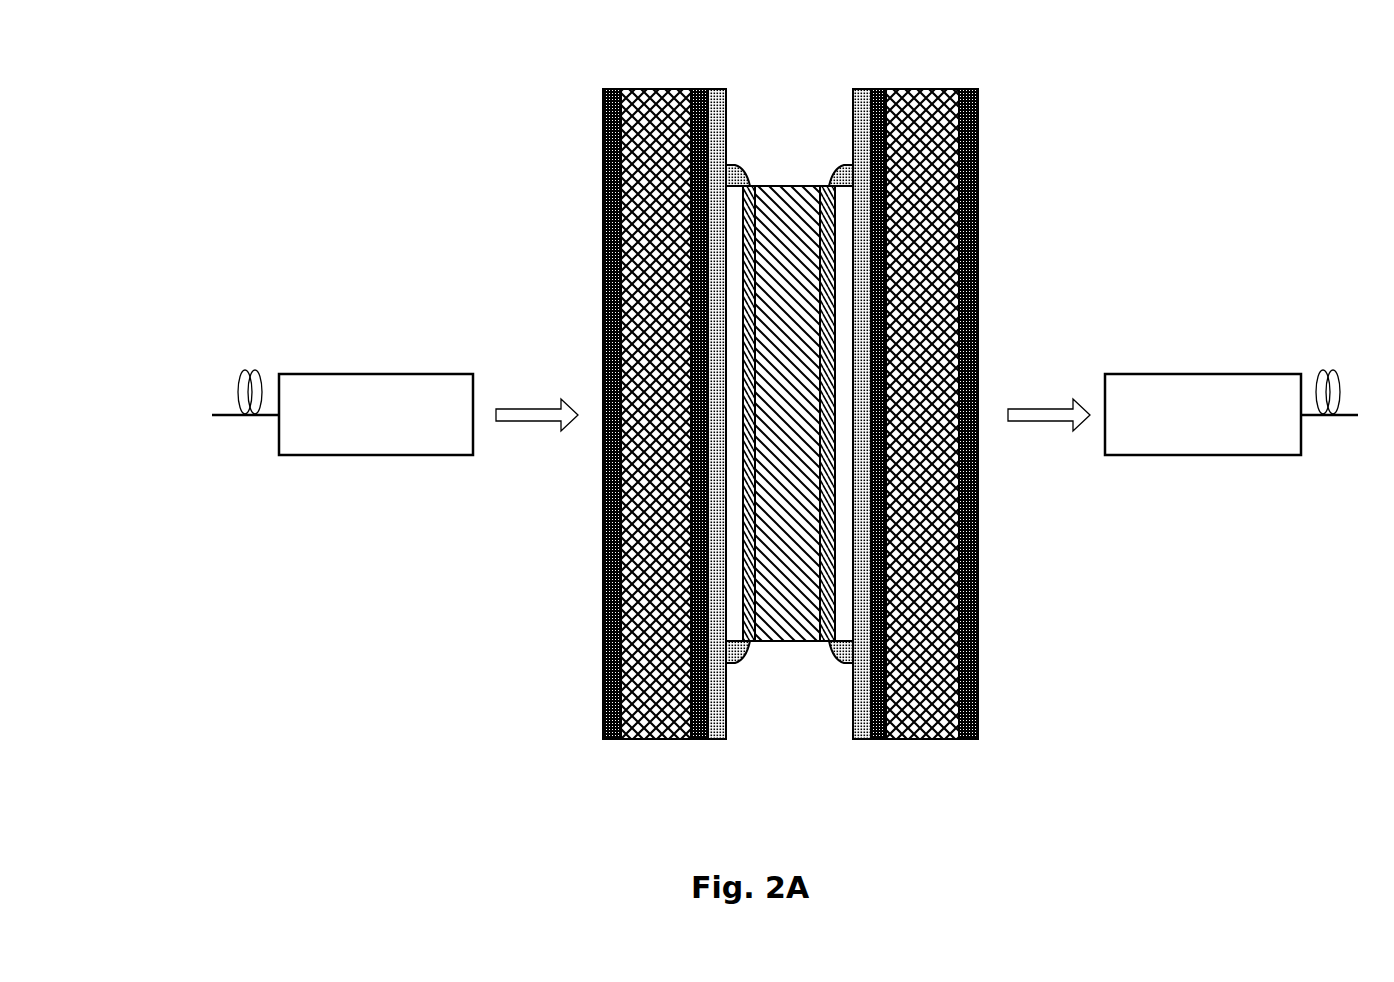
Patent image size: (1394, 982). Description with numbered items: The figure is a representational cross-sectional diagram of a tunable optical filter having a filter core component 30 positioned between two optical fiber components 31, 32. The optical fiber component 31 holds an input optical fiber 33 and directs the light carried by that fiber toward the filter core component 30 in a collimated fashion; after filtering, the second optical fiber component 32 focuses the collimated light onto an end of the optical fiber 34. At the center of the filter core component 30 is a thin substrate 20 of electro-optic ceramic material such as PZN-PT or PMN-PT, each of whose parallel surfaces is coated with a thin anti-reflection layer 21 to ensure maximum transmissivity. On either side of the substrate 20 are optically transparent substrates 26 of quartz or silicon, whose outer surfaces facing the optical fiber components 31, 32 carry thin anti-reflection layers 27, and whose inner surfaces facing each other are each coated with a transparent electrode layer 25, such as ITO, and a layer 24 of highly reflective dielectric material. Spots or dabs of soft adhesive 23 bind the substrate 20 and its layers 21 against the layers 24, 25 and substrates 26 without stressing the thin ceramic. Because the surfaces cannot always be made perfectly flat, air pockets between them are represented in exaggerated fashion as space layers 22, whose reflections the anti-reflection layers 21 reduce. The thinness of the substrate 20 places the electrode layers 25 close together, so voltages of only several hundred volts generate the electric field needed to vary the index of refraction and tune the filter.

The electro-optic ceramic substrate 20 is at (789, 434).
The anti-reflection layer 21 is at (747, 180).
The space layer 22 is at (740, 634).
The soft adhesive 23 is at (830, 158).
The highly reflective layer 24 is at (708, 706).
The transparent electrode layer 25 is at (870, 104).
The optically transparent substrate 26 is at (892, 731).
The anti-reflection layer 27 is at (605, 98).
The filter core component 30 is at (982, 773).
The optical fiber component 31 is at (380, 375).
The second optical fiber component 32 is at (1258, 375).
The input optical fiber 33 is at (230, 407).
The optical fiber 34 is at (1338, 408).